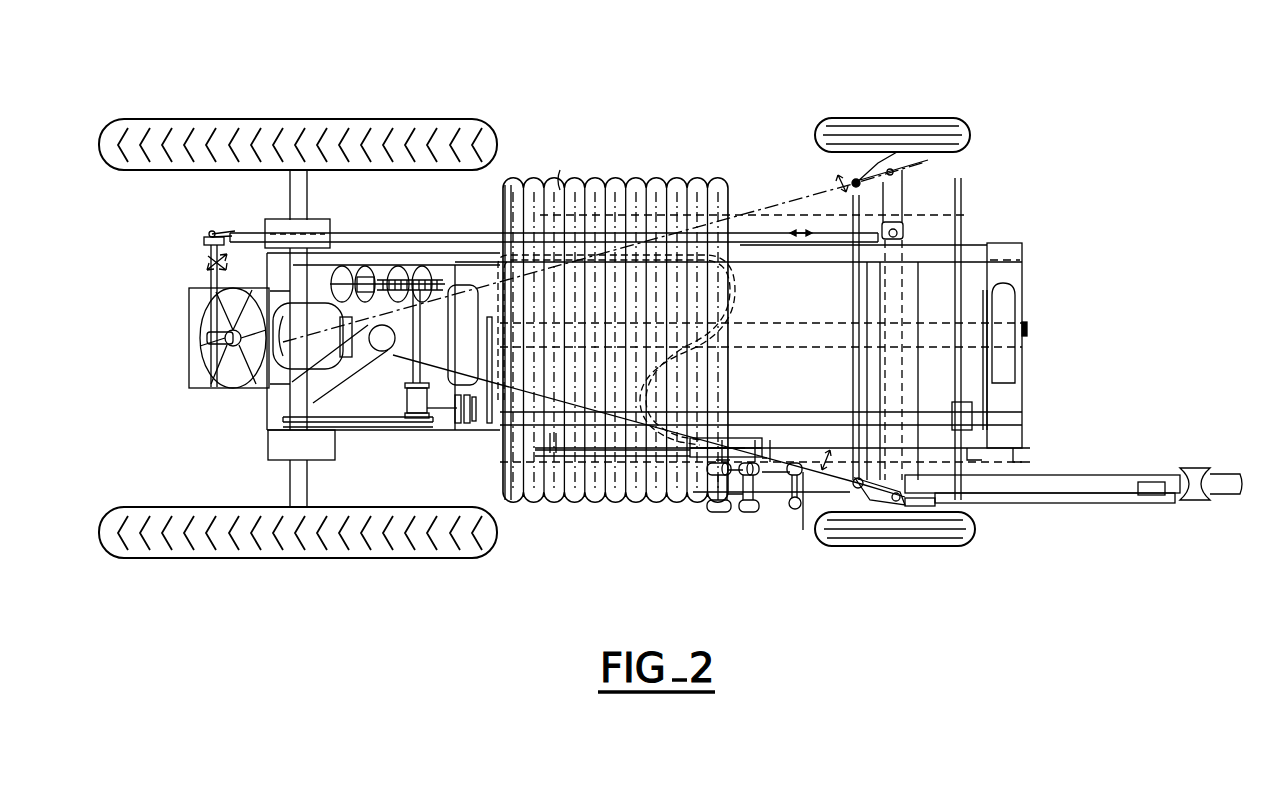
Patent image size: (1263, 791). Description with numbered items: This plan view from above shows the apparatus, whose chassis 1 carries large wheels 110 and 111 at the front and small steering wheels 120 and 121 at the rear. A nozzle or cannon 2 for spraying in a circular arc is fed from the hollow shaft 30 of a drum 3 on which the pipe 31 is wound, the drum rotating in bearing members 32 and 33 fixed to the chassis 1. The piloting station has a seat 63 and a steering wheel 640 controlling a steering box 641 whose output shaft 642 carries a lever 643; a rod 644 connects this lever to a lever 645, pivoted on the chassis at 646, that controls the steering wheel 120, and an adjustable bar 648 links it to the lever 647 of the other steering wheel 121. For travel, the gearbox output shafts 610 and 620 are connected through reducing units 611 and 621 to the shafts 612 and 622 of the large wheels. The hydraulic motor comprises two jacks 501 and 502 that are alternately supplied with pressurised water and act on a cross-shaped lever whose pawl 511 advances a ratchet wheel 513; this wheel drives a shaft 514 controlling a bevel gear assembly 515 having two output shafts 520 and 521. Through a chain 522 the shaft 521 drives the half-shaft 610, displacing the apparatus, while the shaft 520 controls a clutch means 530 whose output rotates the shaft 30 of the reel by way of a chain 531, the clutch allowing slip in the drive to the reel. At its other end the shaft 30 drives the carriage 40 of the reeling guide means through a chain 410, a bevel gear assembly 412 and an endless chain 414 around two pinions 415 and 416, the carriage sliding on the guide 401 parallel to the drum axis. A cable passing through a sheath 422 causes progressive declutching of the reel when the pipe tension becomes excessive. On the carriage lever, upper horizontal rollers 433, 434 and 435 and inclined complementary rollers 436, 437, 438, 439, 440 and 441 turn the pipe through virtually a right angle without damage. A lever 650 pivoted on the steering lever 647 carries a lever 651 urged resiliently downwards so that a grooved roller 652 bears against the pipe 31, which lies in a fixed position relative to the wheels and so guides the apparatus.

The chassis 1 is at (1022, 262).
The nozzle or cannon 2 is at (312, 385).
The drum 3 is at (647, 162).
The hollow shaft 30 is at (1027, 332).
The pipe 31 is at (560, 182).
The bearing member 32 is at (462, 285).
The bearing member 33 is at (1015, 305).
The carriage 40 is at (760, 438).
The seat 63 is at (312, 336).
The large wheel 110 is at (167, 119).
The large wheel 111 is at (168, 558).
The small steering wheel 120 is at (862, 120).
The small steering wheel 121 is at (858, 546).
The guide 401 is at (1030, 458).
The chain 410 is at (987, 372).
The bevel gear assembly 412 is at (972, 418).
The endless chain 414 is at (615, 458).
The pinion 415 is at (552, 458).
The pinion 416 is at (972, 453).
The sheath 422 is at (735, 300).
The upper horizontal roller 433 is at (728, 504).
The upper horizontal roller 434 is at (770, 500).
The upper horizontal roller 435 is at (804, 522).
The inclined complementary roller 436 is at (707, 508).
The inclined complementary roller 437 is at (759, 512).
The inclined complementary roller 438 is at (795, 509).
The inclined complementary roller 439 is at (718, 440).
The inclined complementary roller 440 is at (742, 438).
The inclined complementary roller 441 is at (798, 458).
The jack 501 is at (343, 266).
The jack 502 is at (401, 266).
The pawl 511 is at (369, 267).
The ratchet wheel 513 is at (425, 267).
The shaft 514 is at (413, 356).
The bevel gear assembly 515 is at (407, 400).
The output shaft 520 is at (444, 412).
The output shaft 521 is at (410, 424).
The chain 522 is at (358, 429).
The clutch means 530 is at (464, 425).
The chain 531 is at (490, 425).
The output shaft 610 is at (310, 414).
The reducing unit 611 is at (272, 450).
The shaft 612 is at (290, 495).
The output shaft 620 is at (292, 282).
The reducing unit 621 is at (312, 226).
The shaft 622 is at (305, 182).
The steering wheel 640 is at (192, 365).
The steering box 641 is at (207, 337).
The output shaft 642 is at (208, 272).
The lever 643 is at (208, 233).
The rod 644 is at (238, 232).
The lever 645 is at (895, 185).
The pivot 646 is at (894, 169).
The lever 647 is at (870, 480).
The adjustable bar 648 is at (856, 205).
The lever 650 is at (1052, 503).
The lever 651 is at (1152, 496).
The grooved roller 652 is at (1200, 500).